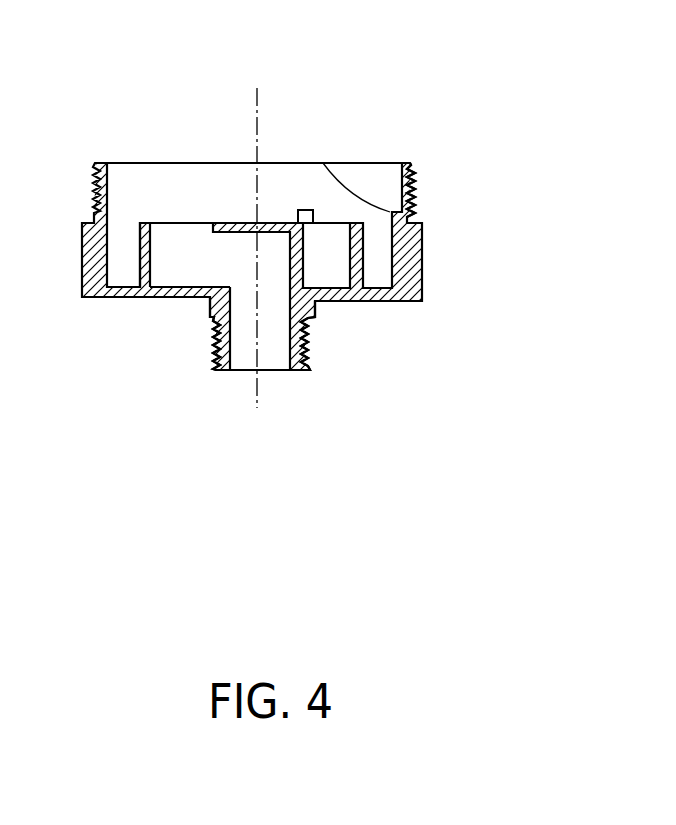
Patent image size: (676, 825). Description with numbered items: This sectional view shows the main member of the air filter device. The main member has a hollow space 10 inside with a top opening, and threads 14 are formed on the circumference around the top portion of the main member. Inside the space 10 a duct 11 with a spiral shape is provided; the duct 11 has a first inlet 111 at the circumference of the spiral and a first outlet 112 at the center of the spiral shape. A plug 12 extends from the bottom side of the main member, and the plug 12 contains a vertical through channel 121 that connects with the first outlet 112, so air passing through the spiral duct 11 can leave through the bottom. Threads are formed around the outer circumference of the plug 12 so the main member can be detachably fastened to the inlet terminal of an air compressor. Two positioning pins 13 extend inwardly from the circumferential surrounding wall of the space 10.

The hollow space 10 is at (168, 178).
The duct 11 is at (143, 246).
The first inlet 111 is at (340, 252).
The first outlet 112 is at (218, 257).
The plug 12 is at (305, 343).
The vertical through channel 121 is at (247, 340).
The positioning pin 13 is at (308, 210).
The threads 14 is at (415, 175).